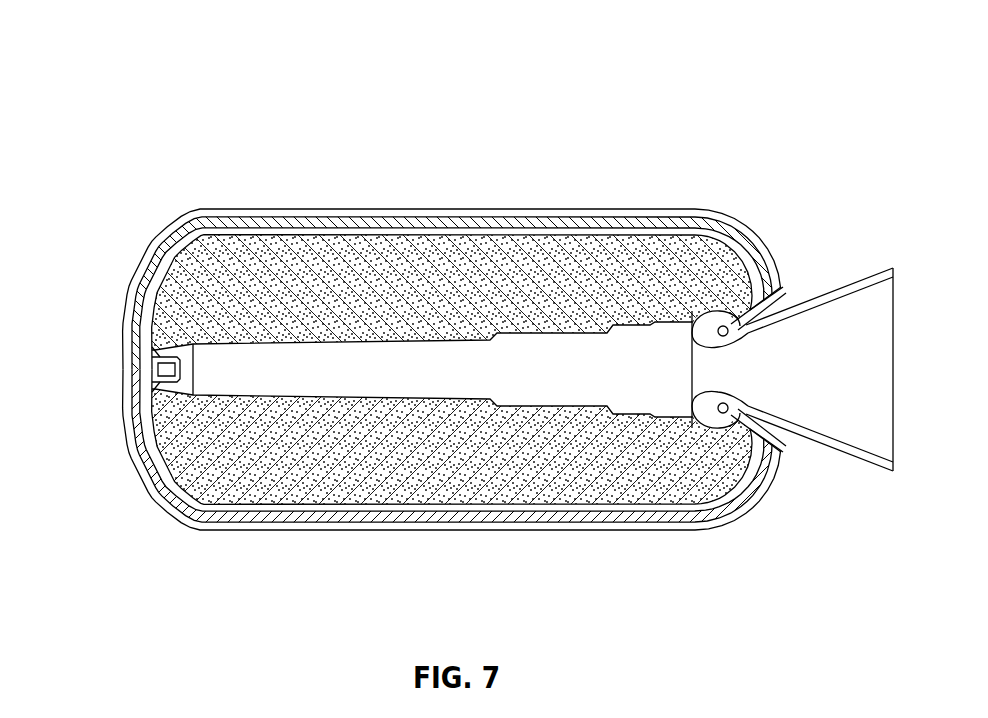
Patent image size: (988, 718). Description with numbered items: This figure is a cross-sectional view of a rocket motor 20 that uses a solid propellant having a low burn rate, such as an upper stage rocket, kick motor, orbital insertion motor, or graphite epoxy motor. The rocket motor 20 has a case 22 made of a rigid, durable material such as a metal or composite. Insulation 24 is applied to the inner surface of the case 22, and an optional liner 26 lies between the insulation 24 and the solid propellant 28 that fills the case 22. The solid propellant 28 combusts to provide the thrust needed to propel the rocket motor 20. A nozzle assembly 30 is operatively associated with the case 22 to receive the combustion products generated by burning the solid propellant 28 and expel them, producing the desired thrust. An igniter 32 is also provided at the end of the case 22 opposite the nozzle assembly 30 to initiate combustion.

The rocket motor 20 is at (548, 171).
The case 22 is at (203, 209).
The insulation 24 is at (314, 217).
The liner 26 is at (384, 232).
The solid propellant 28 is at (517, 530).
The nozzle assembly 30 is at (838, 284).
The igniter 32 is at (123, 354).